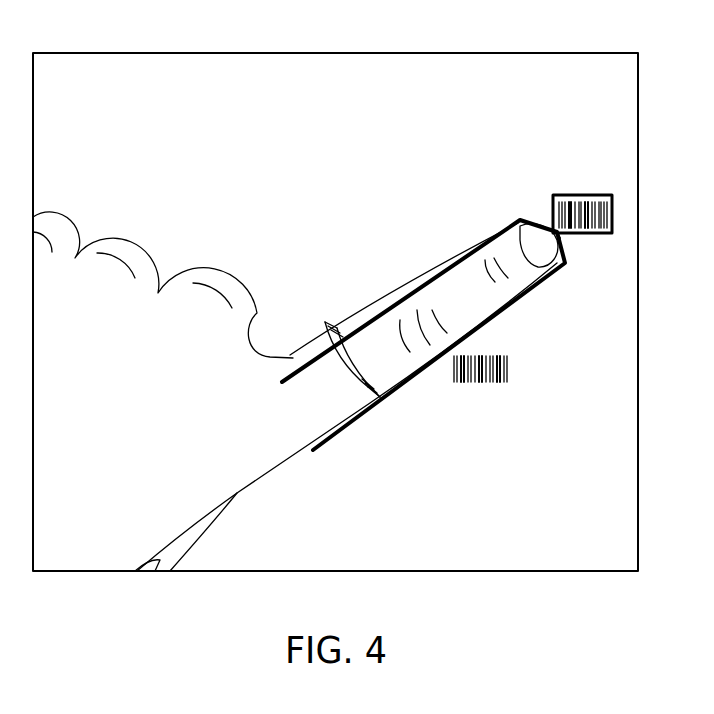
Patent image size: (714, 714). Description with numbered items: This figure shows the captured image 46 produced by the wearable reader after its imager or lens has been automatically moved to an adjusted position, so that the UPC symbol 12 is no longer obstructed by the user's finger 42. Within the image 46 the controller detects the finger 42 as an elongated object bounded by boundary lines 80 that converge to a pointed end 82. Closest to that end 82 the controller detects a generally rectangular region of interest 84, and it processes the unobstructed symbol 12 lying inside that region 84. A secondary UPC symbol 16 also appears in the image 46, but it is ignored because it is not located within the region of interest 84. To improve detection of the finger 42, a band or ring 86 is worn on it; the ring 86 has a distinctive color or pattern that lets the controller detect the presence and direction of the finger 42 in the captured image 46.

The captured image 46 is at (335, 53).
The user's finger 42 is at (462, 272).
The band or ring 86 is at (328, 325).
The boundary lines 80 is at (510, 312).
The pointed end 82 is at (558, 236).
The UPC symbol 12 is at (587, 186).
The region of interest 84 is at (612, 215).
The secondary UPC symbol 16 is at (524, 387).